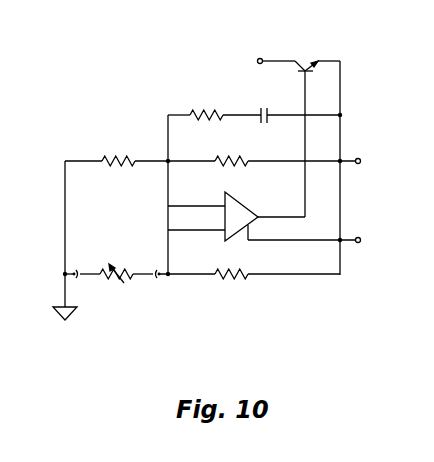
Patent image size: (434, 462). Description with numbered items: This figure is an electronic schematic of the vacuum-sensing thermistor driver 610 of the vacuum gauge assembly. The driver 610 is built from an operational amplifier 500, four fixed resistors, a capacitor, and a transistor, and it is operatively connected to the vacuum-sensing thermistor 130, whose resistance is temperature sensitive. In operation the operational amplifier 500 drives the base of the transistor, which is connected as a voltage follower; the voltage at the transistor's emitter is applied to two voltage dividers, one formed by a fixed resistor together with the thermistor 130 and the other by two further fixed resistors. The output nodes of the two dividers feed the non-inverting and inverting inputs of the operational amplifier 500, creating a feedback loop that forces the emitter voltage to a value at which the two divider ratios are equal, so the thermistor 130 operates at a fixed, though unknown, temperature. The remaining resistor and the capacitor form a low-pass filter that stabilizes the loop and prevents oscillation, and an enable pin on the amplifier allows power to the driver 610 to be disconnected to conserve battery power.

The vacuum-sensing thermistor driver 610 is at (75, 36).
The operational amplifier 500 is at (245, 216).
The vacuum-sensing thermistor 130 is at (98, 329).